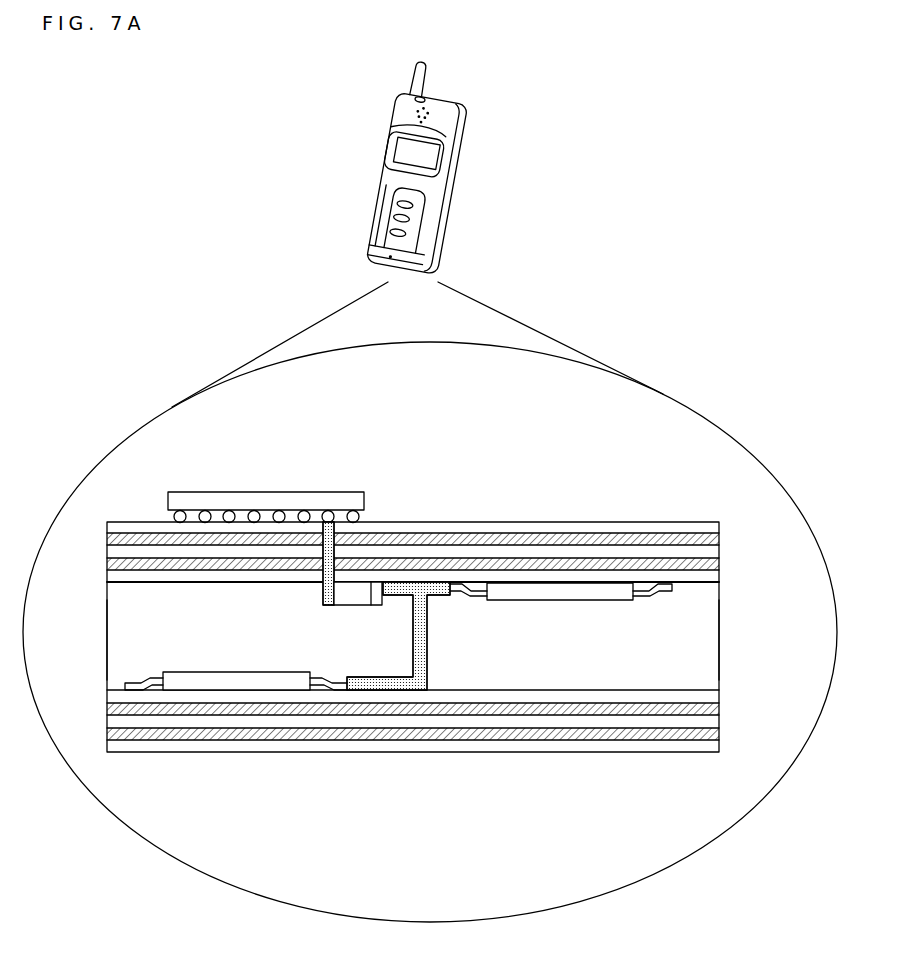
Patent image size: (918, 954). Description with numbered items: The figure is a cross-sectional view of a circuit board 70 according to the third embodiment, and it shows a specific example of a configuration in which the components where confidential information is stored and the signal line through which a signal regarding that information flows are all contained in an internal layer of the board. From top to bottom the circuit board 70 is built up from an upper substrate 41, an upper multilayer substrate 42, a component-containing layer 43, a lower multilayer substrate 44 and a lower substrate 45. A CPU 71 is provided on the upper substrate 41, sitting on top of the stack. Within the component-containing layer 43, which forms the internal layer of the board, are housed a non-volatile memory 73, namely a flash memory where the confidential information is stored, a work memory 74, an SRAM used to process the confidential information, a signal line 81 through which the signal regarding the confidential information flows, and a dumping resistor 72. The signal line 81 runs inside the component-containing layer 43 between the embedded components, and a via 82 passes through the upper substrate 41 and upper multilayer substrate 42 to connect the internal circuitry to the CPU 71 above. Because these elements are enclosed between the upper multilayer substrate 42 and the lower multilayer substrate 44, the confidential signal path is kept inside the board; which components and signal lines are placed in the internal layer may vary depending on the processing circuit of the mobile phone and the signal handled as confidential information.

The circuit board 70 is at (412, 433).
The CPU 71 is at (290, 495).
The dumping resistor 72 is at (353, 600).
The non-volatile memory 73 is at (528, 588).
The work memory 74 is at (237, 683).
The signal line 81 is at (423, 588).
The via conductor 82 is at (365, 532).
The upper substrate 41 is at (715, 528).
The upper multilayer substrate 42 is at (715, 553).
The component-containing layer 43 is at (715, 630).
The lower multilayer substrate 44 is at (715, 720).
The lower substrate 45 is at (715, 748).